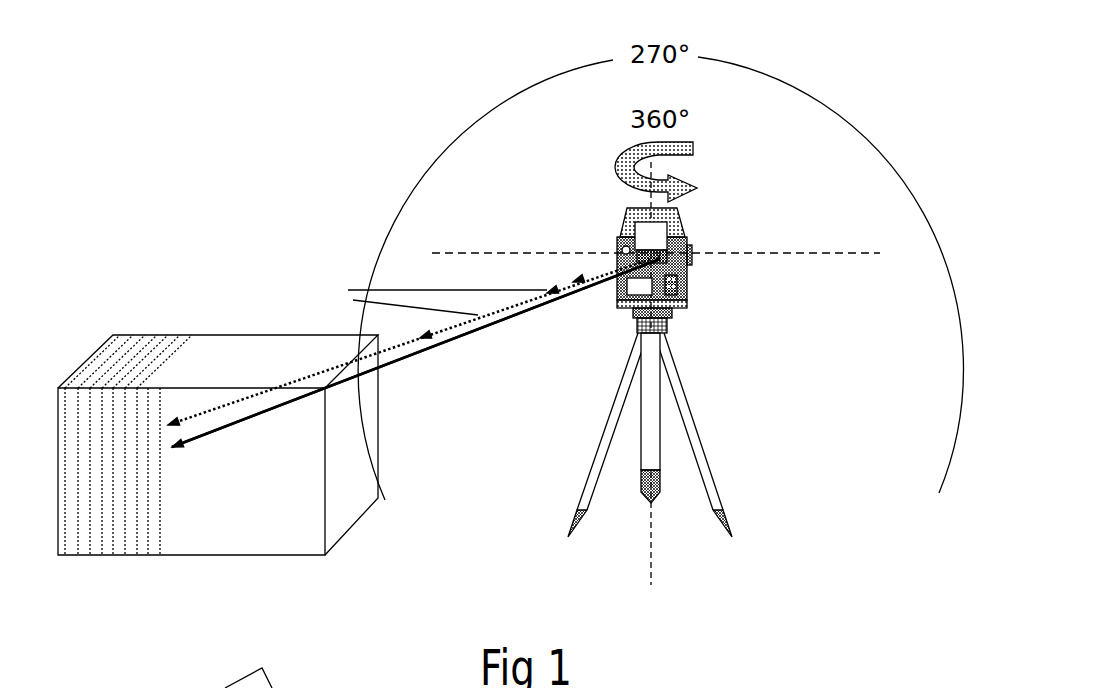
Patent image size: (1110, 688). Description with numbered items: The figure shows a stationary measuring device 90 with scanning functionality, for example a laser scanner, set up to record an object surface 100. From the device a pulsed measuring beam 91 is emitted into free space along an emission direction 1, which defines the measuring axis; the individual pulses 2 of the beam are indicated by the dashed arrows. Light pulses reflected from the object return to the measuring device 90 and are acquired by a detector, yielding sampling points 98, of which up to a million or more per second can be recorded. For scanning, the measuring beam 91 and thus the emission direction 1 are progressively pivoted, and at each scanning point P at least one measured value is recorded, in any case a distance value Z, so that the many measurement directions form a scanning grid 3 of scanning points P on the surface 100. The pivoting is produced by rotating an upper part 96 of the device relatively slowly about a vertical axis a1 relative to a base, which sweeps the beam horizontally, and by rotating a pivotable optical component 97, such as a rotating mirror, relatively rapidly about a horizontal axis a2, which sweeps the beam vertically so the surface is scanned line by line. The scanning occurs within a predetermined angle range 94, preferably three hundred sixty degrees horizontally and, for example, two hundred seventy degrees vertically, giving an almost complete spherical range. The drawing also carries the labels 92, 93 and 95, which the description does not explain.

The emission direction 1 is at (580, 273).
The individual pulses 2 is at (235, 397).
The scanning grid 3 is at (218, 409).
The stationary measuring device 90 is at (656, 271).
The measuring beam 91 is at (433, 325).
The rotation about vertical axis 92 is at (703, 165).
The horizontal measuring range 93 is at (715, 32).
The angle range 94 is at (527, 162).
The tripod 95 is at (688, 356).
The upper part 96 is at (596, 233).
The pivotable optical component 97 is at (685, 293).
The sampling points 98 is at (128, 473).
The object surface 100 is at (308, 545).
The vertical axis a1 is at (647, 545).
The horizontal axis a2 is at (712, 258).
The scanning point P is at (147, 490).
The distance value Z is at (413, 358).